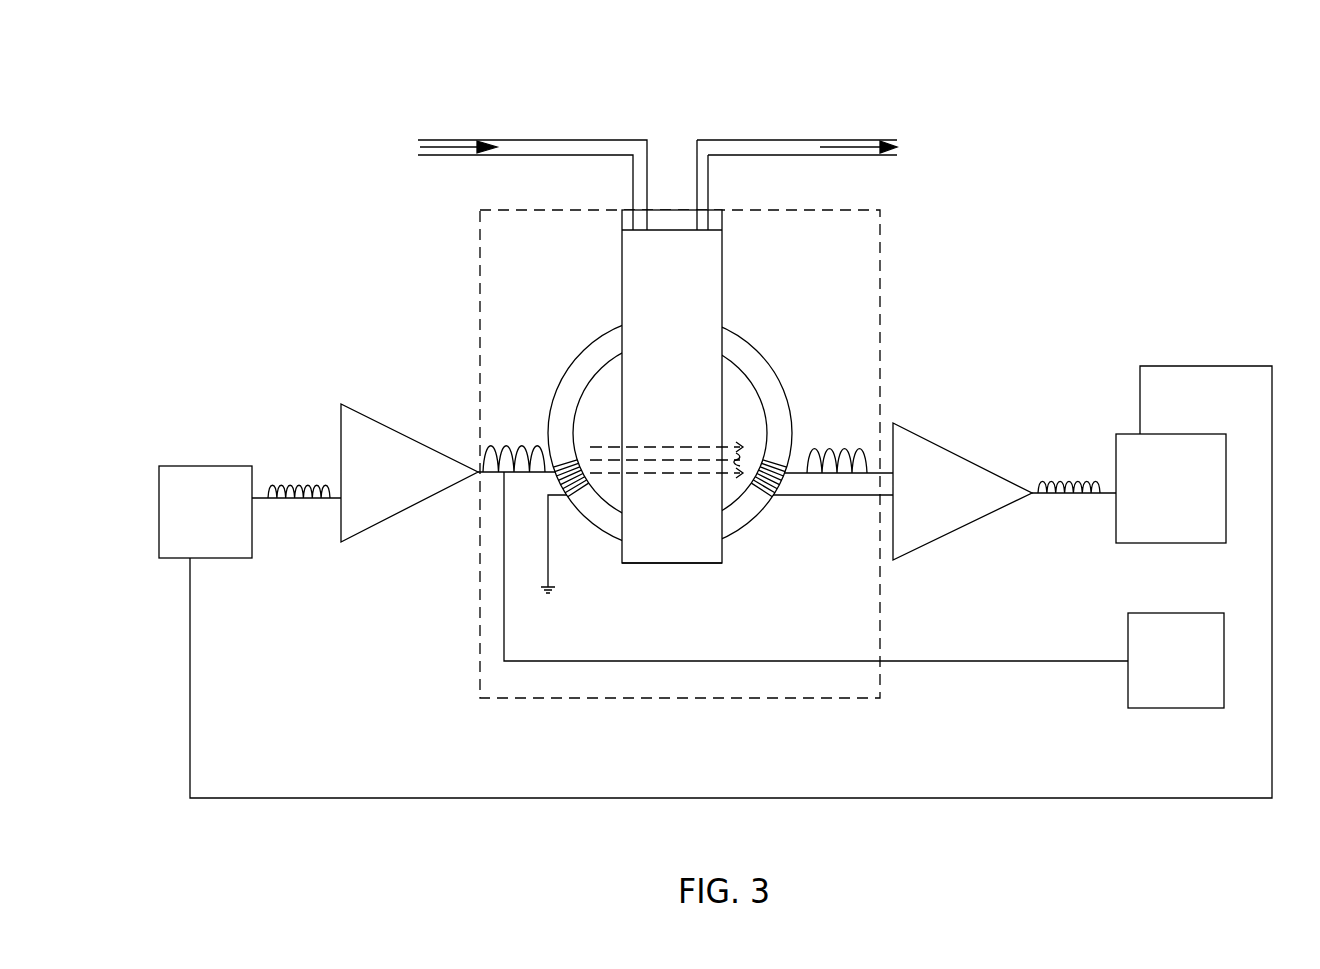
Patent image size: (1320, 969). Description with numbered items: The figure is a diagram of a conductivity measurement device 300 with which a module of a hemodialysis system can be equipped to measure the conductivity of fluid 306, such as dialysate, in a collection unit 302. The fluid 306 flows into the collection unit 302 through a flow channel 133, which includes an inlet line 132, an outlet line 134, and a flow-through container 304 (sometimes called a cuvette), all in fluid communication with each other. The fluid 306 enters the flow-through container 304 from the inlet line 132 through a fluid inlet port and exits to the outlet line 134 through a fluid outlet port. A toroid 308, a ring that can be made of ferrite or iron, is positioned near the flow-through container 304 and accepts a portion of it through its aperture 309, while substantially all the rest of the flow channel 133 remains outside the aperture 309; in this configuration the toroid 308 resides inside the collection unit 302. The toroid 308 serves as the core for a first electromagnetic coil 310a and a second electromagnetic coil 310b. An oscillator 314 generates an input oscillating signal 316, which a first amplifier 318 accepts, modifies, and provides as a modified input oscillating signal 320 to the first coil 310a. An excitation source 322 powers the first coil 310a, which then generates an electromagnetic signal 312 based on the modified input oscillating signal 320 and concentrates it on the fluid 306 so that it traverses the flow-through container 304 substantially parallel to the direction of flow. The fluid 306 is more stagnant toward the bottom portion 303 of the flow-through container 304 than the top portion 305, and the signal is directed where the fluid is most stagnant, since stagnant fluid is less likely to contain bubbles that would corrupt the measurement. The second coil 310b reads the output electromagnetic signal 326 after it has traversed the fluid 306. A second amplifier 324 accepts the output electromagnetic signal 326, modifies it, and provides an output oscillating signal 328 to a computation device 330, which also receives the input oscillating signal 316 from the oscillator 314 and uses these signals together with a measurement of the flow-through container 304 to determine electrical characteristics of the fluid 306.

The conductivity measurement device 300 is at (293, 122).
The inlet line 132 is at (457, 140).
The flow channel 133 is at (660, 107).
The outlet line 134 is at (860, 140).
The collection unit 302 is at (480, 298).
The bottom portion 303 is at (722, 547).
The flow-through container 304 is at (622, 292).
The top portion 305 is at (622, 249).
The fluid 306 is at (692, 295).
The toroid 308 is at (780, 372).
The aperture 309 is at (735, 383).
The first electromagnetic coil 310a is at (560, 475).
The second electromagnetic coil 310b is at (770, 490).
The electromagnetic signal 312 is at (600, 447).
The oscillator 314 is at (222, 558).
The input oscillating signal 316 is at (303, 480).
The first amplifier 318 is at (377, 418).
The modified input oscillating signal 320 is at (503, 443).
The excitation source 322 is at (1162, 612).
The second amplifier 324 is at (935, 437).
The output electromagnetic signal 326 is at (842, 456).
The output oscillating signal 328 is at (1057, 477).
The computation device 330 is at (1195, 433).